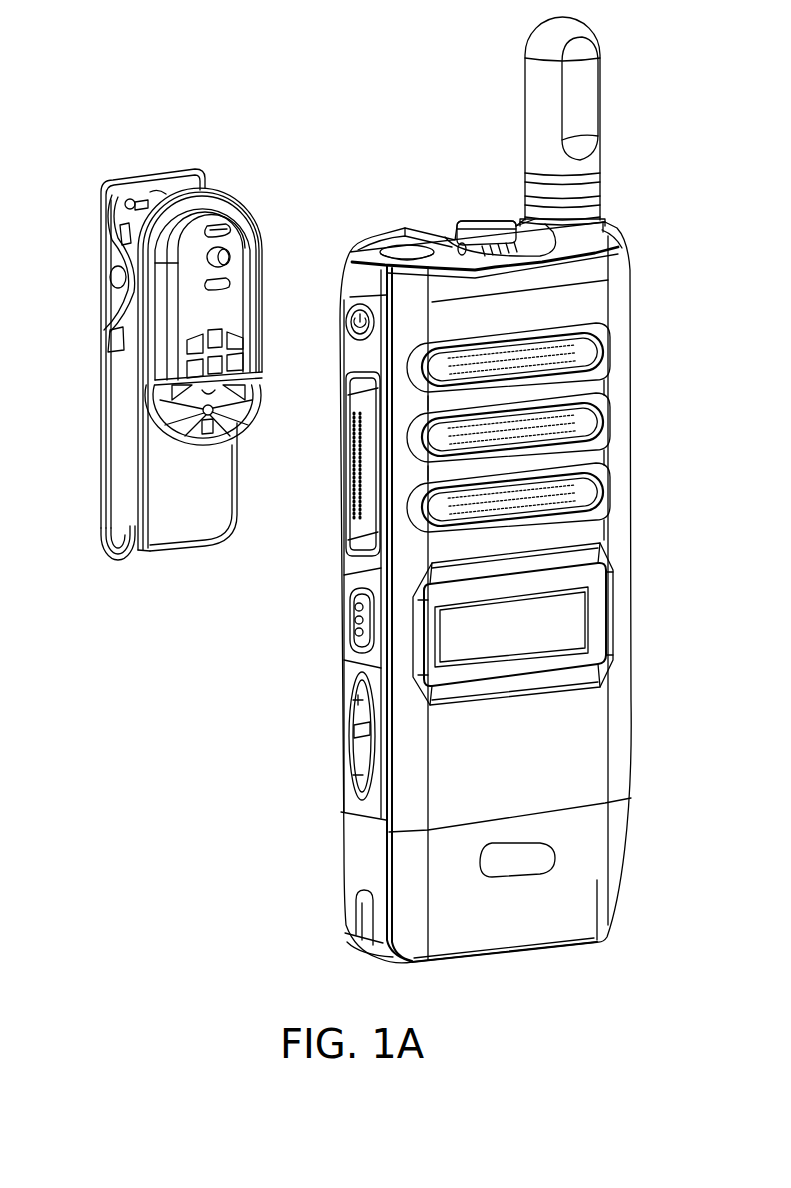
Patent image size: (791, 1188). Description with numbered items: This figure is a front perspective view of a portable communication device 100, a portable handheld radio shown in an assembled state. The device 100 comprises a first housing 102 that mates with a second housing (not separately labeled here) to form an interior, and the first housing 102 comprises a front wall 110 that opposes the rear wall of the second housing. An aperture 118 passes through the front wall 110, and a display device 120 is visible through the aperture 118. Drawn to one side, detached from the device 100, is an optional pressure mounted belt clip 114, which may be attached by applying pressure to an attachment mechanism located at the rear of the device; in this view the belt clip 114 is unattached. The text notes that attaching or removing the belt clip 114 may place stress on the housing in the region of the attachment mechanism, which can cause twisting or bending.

The portable communication device 100 is at (652, 91).
The first housing 102 is at (604, 933).
The front wall 110 is at (593, 750).
The belt clip 114 is at (132, 182).
The aperture 118 is at (616, 598).
The display device 120 is at (575, 625).